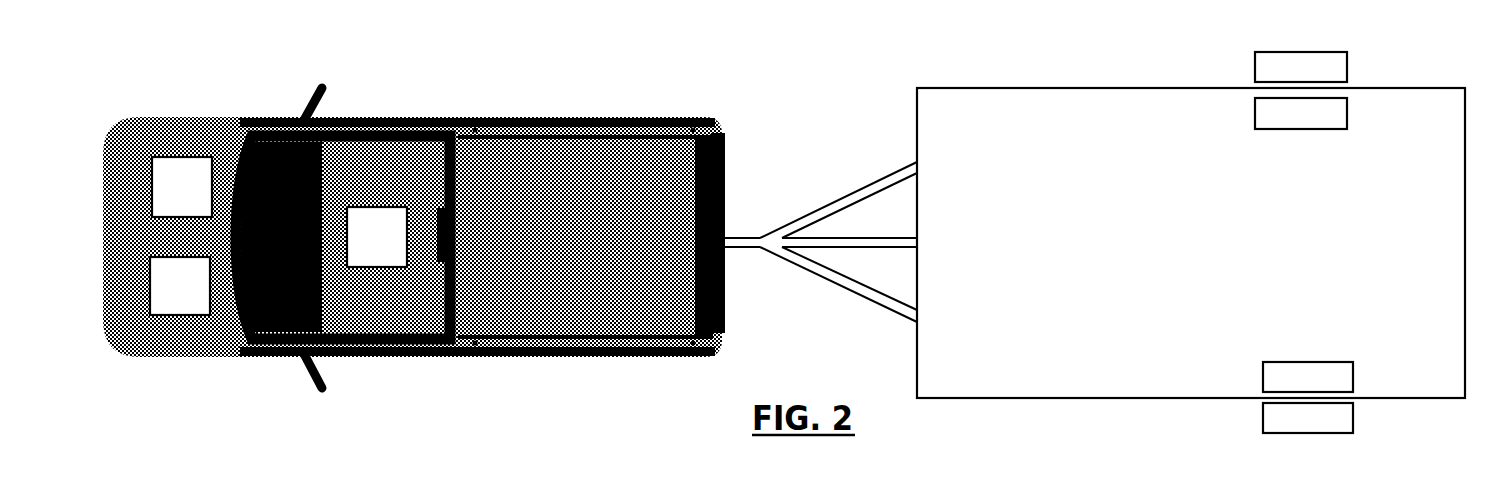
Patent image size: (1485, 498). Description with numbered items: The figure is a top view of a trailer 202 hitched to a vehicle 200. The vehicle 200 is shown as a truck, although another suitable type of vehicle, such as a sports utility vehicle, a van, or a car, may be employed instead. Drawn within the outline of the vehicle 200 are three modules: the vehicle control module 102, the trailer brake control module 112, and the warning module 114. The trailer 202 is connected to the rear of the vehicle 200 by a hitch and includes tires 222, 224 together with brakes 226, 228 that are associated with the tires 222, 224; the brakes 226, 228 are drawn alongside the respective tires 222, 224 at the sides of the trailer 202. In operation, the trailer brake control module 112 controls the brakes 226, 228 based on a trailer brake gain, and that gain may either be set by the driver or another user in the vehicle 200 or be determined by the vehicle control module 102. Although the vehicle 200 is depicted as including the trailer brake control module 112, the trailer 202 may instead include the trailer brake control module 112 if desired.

The vehicle control module 102 is at (185, 157).
The trailer brake control module 112 is at (180, 315).
The warning module 114 is at (377, 207).
The vehicle 200 is at (568, 130).
The trailer 202 is at (1020, 88).
The tire 222 is at (1300, 52).
The tire 224 is at (1308, 433).
The brake 226 is at (1308, 129).
The brake 228 is at (1313, 362).